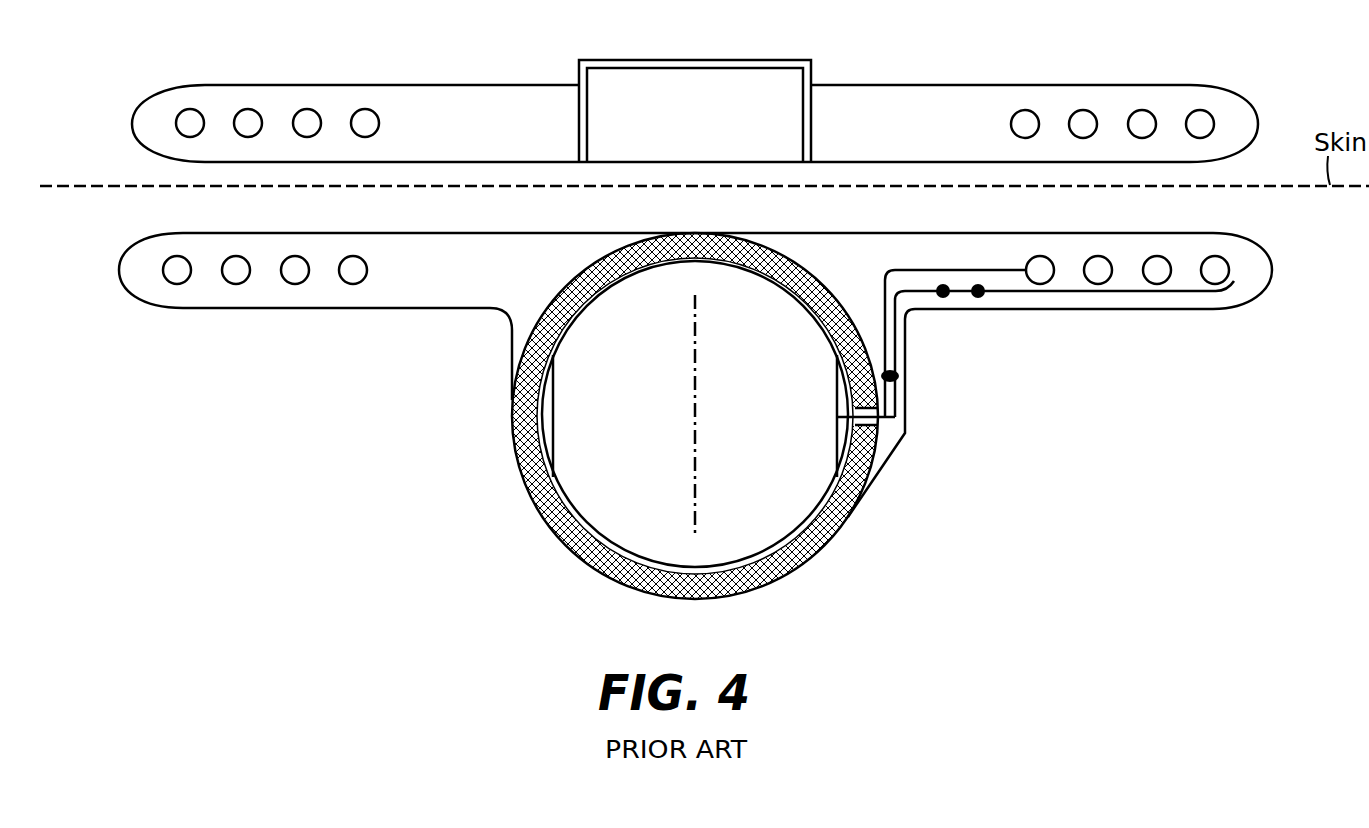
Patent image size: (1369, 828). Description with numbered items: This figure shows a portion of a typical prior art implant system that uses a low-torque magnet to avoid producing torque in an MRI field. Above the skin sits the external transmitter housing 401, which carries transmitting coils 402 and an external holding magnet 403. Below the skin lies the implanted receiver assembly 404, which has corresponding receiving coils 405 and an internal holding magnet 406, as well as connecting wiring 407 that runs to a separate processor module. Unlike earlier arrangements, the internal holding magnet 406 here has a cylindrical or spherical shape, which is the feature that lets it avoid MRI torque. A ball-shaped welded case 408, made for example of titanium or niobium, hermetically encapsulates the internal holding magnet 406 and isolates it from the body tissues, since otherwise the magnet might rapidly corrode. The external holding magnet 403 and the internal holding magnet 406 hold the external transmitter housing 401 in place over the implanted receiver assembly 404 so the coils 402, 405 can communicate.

The external transmitter housing 401 is at (888, 48).
The transmitting coils 402 is at (1202, 127).
The external holding magnet 403 is at (793, 104).
The implanted receiver assembly 404 is at (948, 472).
The receiving coils 405 is at (1218, 276).
The internal holding magnet 406 is at (613, 434).
The connecting wiring 407 is at (978, 298).
The ball-shaped welded case 408 is at (808, 562).